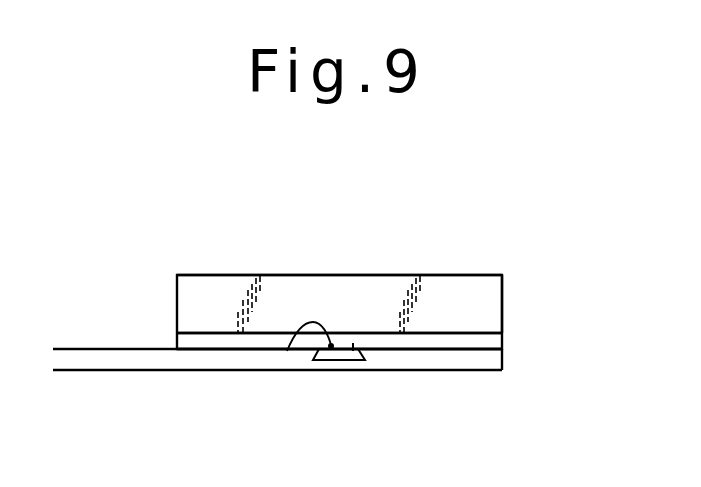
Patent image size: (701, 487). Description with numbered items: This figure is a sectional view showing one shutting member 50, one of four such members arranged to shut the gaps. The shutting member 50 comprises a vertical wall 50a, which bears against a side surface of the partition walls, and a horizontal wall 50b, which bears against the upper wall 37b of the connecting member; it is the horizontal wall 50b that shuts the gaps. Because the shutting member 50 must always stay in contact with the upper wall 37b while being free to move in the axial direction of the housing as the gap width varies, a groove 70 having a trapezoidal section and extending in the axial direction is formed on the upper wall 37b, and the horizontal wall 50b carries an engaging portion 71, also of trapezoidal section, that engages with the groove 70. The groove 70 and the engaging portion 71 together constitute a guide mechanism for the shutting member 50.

The shutting member 50 is at (308, 273).
The vertical wall 50a is at (492, 292).
The horizontal wall 50b is at (492, 338).
The upper wall 37b is at (198, 360).
The groove 70 is at (287, 351).
The engaging portion 71 is at (353, 350).